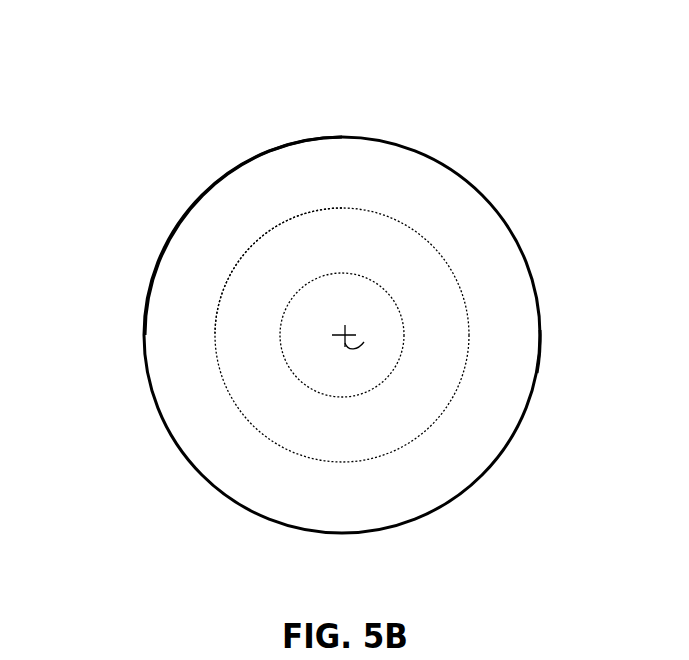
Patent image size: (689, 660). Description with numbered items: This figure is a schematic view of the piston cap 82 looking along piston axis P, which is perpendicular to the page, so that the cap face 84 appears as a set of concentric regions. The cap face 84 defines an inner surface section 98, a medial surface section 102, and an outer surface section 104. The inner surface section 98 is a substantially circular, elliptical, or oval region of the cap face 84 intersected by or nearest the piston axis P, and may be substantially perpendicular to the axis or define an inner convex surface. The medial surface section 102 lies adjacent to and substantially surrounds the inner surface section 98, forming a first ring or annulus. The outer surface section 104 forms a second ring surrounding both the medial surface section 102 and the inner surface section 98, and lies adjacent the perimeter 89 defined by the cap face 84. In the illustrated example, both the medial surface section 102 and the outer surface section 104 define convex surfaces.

The piston cap 82 is at (332, 110).
The cap face 84 is at (475, 262).
The perimeter 89 is at (537, 373).
The inner surface section 98 is at (315, 335).
The medial surface section 102 is at (268, 280).
The outer surface section 104 is at (240, 225).